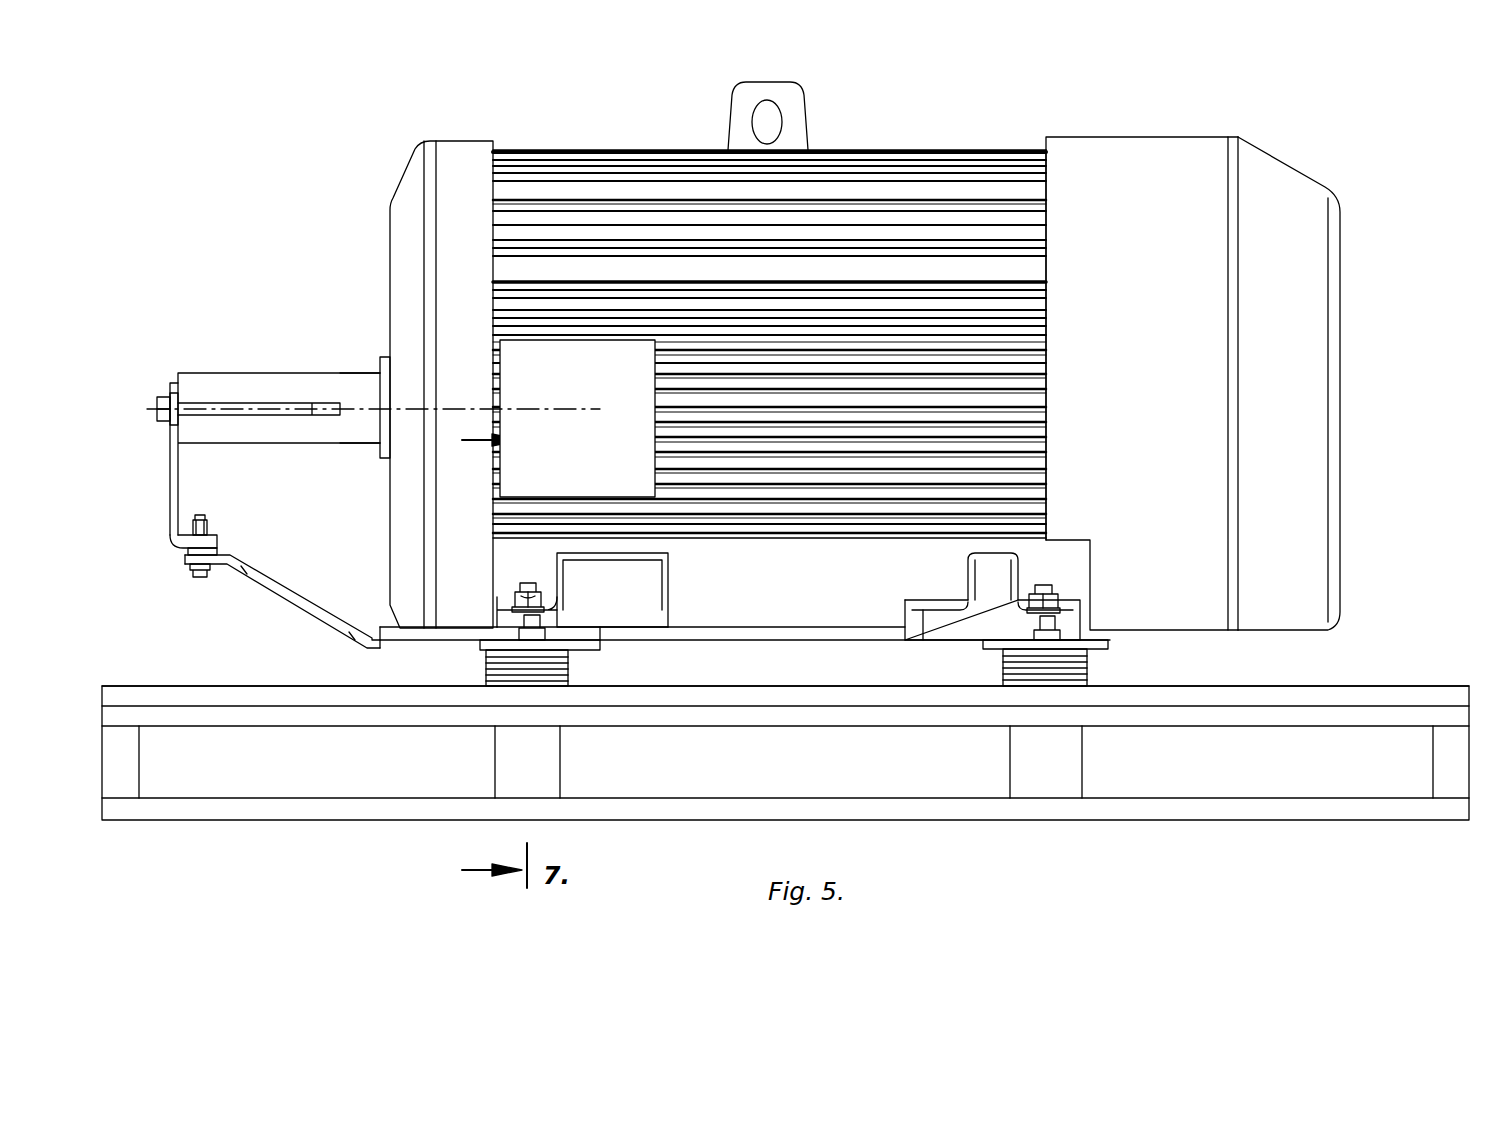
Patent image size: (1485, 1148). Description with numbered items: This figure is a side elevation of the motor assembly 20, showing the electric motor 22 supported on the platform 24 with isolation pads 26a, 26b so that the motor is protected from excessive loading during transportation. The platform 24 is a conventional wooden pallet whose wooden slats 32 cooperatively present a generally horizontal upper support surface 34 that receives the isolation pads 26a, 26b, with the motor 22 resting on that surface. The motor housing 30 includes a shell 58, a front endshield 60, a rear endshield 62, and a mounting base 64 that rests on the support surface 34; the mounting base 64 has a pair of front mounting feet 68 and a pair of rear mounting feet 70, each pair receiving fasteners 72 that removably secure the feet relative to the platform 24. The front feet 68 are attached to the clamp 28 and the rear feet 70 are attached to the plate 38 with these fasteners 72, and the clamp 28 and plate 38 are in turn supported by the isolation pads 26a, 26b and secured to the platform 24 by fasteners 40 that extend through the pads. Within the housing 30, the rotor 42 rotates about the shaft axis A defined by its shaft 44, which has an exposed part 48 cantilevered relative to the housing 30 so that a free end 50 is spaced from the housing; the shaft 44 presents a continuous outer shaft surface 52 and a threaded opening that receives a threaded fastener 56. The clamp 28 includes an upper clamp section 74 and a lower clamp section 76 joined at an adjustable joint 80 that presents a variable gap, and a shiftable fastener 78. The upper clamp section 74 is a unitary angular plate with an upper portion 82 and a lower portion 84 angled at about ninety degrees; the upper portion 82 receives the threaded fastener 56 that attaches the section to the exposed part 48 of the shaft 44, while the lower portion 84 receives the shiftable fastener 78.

The motor assembly 20 is at (1308, 142).
The electric motor 22 is at (848, 165).
The platform 24 is at (1335, 808).
The isolation pad 26a is at (562, 670).
The isolation pad 26b is at (1080, 672).
The clamp 28 is at (335, 622).
The motor housing 30 is at (1000, 155).
The wooden slats 32 is at (1403, 698).
The upper support surface 34 is at (1338, 685).
The plate 38 is at (1000, 645).
The fasteners 40 is at (545, 625).
The rotor 42 is at (372, 362).
The shaft 44 is at (348, 382).
The exposed part 48 is at (356, 435).
The free end 50 is at (157, 320).
The outer shaft surface 52 is at (310, 430).
The threaded fastener 56 is at (160, 402).
The shell 58 is at (640, 157).
The front endshield 60 is at (458, 152).
The rear endshield 62 is at (1142, 146).
The mounting base 64 is at (995, 573).
The front mounting feet 68 is at (497, 628).
The rear mounting feet 70 is at (945, 625).
The fasteners 72 is at (522, 594).
The upper clamp section 74 is at (176, 453).
The lower clamp section 76 is at (380, 648).
The shiftable fastener 78 is at (200, 578).
The adjustable joint 80 is at (156, 592).
The upper portion 82 is at (176, 490).
The lower portion 84 is at (205, 528).
The shaft axis A is at (213, 403).